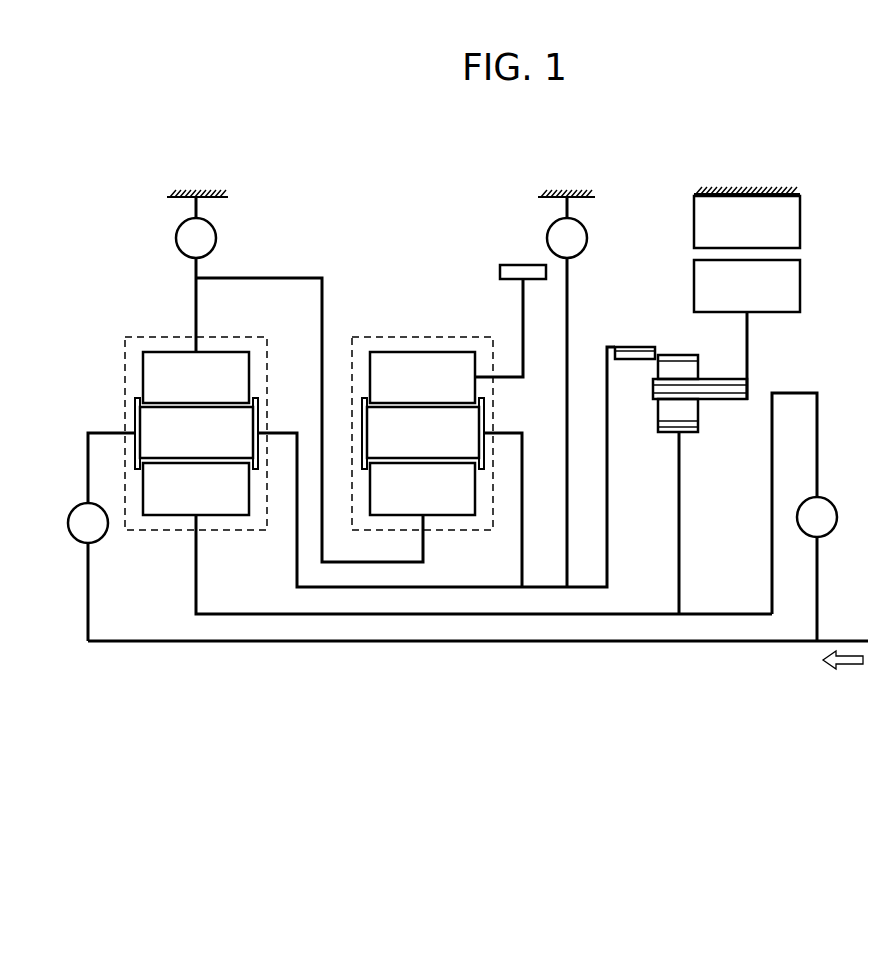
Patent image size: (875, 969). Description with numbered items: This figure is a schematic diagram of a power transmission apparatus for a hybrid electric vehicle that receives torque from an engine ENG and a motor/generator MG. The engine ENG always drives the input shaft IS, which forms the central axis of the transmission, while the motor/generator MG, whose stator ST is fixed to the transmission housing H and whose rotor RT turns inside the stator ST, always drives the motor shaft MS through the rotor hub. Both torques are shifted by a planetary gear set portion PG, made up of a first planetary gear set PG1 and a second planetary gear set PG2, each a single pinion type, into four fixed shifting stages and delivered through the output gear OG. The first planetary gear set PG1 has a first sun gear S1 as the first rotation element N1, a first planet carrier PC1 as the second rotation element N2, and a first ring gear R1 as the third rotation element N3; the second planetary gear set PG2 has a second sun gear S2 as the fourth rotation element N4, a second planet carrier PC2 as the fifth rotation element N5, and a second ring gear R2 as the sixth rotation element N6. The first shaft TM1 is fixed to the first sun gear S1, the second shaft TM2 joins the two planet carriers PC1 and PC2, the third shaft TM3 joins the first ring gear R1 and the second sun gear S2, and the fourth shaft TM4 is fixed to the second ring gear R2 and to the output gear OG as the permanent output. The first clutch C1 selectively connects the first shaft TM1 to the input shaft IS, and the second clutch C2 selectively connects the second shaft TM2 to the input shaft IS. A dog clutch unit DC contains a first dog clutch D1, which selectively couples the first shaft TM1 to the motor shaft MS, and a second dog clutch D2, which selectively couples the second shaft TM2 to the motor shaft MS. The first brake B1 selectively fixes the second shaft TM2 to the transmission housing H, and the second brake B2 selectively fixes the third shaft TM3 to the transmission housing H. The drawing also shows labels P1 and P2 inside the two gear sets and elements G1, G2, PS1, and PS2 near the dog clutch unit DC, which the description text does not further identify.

The planetary gear set portion PG is at (142, 728).
The first planetary gear set PG1 is at (152, 533).
The second planetary gear set PG2 is at (447, 533).
The first rotation element N1 is at (196, 489).
The second rotation element N2 is at (148, 423).
The third rotation element N3 is at (196, 377).
The fourth rotation element N4 is at (422, 489).
The fifth rotation element N5 is at (460, 426).
The sixth rotation element N6 is at (422, 377).
The first sun gear S1 is at (196, 489).
The first planet carrier PC1 is at (135, 404).
The first ring gear R1 is at (196, 377).
The second sun gear S2 is at (422, 489).
The second planet carrier PC2 is at (485, 406).
The second ring gear R2 is at (422, 377).
The first pinion gear P1 is at (196, 432).
The second pinion gear P2 is at (423, 432).
The first shaft TM1 is at (538, 616).
The second shaft TM2 is at (450, 588).
The third shaft TM3 is at (283, 278).
The fourth shaft TM4 is at (523, 305).
The input shaft IS is at (723, 642).
The engine ENG is at (843, 675).
The first clutch C1 is at (804, 517).
The second clutch C2 is at (101, 537).
The first brake B1 is at (535, 392).
The second brake B2 is at (196, 274).
The transmission housing H is at (196, 190).
The output gear OG is at (523, 265).
The motor/generator MG is at (769, 254).
The stator ST is at (747, 222).
The rotor RT is at (747, 286).
The motor shaft MS is at (749, 339).
The dog clutch unit DC is at (724, 371).
The first dog clutch D1 is at (701, 452).
The second dog clutch D2 is at (641, 335).
The first gear G1 is at (665, 433).
The second gear G2 is at (616, 347).
The first power shift gear PS1 is at (698, 412).
The second power shift gear PS2 is at (679, 365).